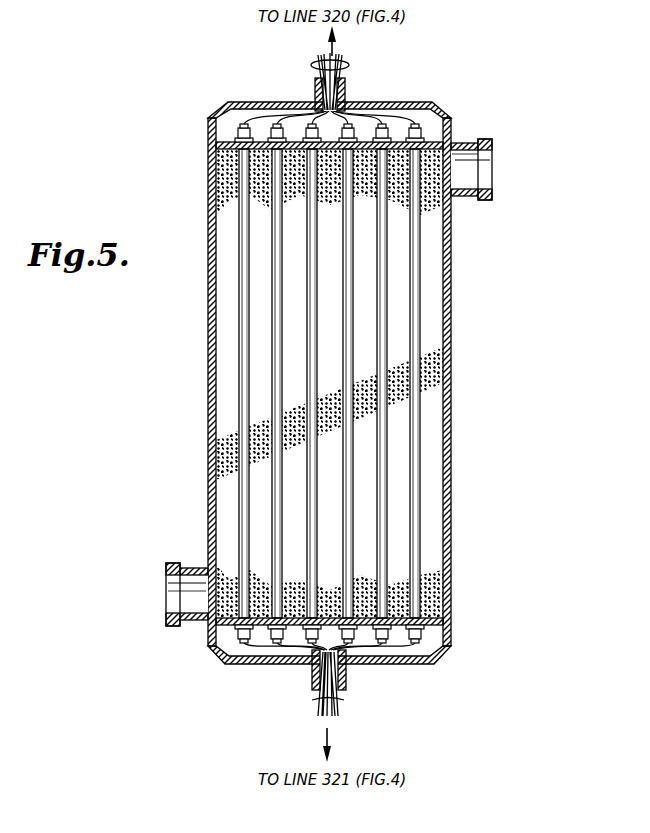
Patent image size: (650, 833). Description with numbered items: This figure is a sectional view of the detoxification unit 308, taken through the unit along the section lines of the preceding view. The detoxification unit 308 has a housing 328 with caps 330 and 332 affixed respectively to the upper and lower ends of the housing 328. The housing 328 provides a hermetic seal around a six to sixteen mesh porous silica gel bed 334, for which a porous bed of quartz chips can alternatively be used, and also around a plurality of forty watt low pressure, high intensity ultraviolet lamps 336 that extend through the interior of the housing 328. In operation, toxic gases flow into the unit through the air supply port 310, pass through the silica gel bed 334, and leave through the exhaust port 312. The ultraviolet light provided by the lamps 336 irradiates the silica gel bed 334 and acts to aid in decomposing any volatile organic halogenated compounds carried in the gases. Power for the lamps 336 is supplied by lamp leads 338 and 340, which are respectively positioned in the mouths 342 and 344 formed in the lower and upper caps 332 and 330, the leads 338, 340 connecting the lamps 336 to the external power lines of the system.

The detoxification unit 308 is at (456, 107).
The air supply port 310 is at (190, 565).
The exhaust port 312 is at (466, 200).
The housing 328 is at (452, 497).
The cap 330 is at (231, 101).
The cap 332 is at (450, 652).
The porous silica gel bed 334 is at (447, 357).
The ultraviolet lamps 336 is at (348, 283).
The lamp leads 338 is at (346, 697).
The lamp leads 340 is at (350, 62).
The mouth 342 is at (310, 676).
The mouth 344 is at (346, 90).